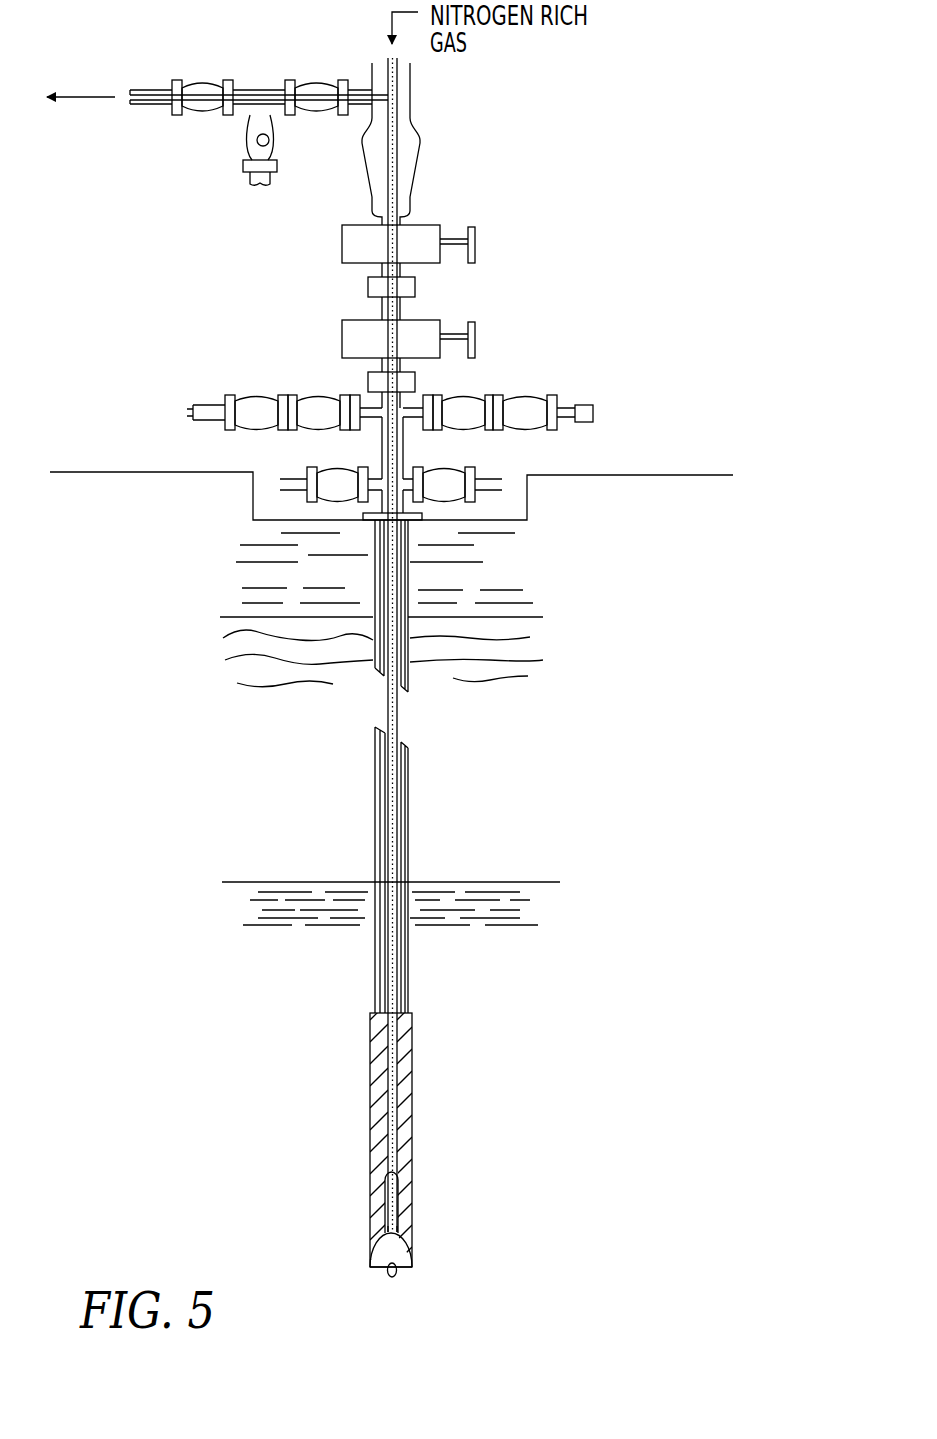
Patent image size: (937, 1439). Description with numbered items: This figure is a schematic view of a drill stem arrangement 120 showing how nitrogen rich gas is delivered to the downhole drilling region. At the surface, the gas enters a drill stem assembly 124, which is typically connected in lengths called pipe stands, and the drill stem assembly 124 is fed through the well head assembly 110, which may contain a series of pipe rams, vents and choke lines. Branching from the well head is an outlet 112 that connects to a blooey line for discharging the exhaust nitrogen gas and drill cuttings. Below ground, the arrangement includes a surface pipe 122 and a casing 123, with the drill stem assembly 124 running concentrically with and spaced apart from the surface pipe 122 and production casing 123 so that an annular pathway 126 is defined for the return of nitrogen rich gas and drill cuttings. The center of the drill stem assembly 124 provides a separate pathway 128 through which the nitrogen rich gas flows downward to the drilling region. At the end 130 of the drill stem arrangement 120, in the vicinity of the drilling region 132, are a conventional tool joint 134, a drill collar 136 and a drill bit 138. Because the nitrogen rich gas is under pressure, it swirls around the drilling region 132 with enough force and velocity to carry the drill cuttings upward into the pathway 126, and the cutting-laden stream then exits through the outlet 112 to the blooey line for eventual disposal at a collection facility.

The well head assembly 110 is at (510, 301).
The outlet 112 is at (152, 77).
The drill stem arrangement 120 is at (391, 742).
The surface pipe 122 is at (407, 575).
The casing 123 is at (410, 820).
The drill stem assembly 124 is at (386, 1052).
The pathway 126 is at (397, 872).
The pathway 128 is at (396, 722).
The end 130 is at (398, 1139).
The drilling region 132 is at (430, 1264).
The tool joint 134 is at (383, 1186).
The drill collar 136 is at (387, 1227).
The drill bit 138 is at (370, 1266).